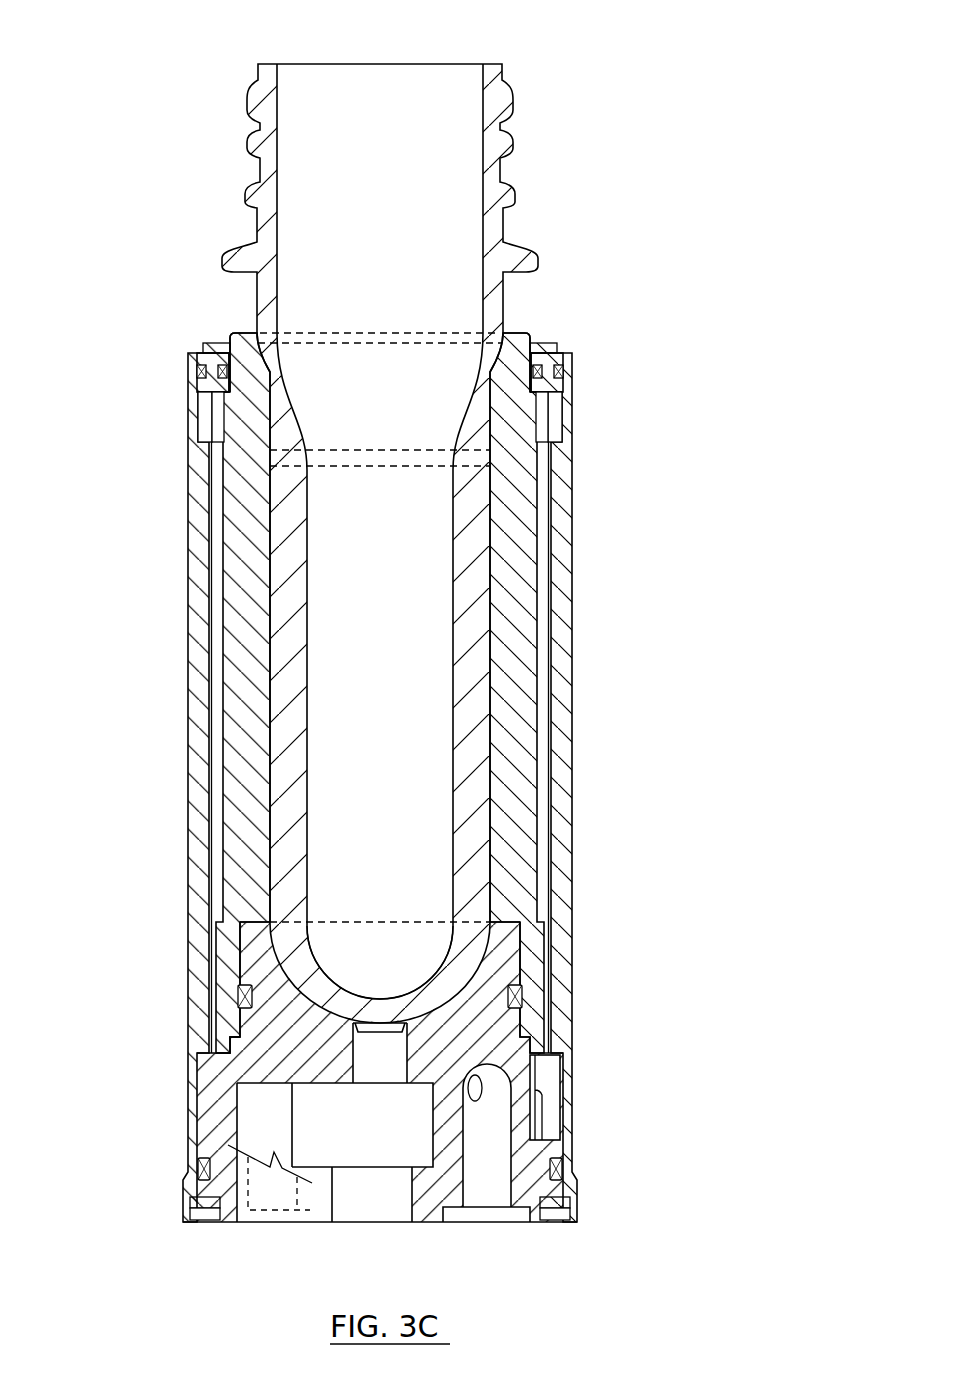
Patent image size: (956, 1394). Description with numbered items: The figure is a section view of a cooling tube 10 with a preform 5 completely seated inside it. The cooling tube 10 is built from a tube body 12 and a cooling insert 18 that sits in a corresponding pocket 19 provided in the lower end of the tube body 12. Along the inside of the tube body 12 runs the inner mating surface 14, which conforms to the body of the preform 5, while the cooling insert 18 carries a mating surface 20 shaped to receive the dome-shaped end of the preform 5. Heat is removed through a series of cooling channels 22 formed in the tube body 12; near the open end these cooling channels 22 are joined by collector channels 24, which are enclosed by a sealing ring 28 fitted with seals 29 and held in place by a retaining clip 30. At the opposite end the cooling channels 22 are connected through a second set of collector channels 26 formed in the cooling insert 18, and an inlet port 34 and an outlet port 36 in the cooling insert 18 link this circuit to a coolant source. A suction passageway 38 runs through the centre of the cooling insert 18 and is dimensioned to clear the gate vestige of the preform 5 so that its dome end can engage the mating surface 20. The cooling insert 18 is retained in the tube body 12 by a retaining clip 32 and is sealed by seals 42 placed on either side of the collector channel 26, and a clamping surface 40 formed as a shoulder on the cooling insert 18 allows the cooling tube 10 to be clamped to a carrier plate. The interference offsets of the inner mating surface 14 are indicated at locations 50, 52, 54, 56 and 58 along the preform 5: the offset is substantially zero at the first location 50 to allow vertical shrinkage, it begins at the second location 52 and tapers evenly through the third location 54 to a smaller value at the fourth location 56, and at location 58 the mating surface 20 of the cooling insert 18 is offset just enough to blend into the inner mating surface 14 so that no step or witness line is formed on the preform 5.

The preform 5 is at (420, 85).
The cooling tube 10 is at (155, 345).
The tube body 12 is at (515, 497).
The inner mating surface 14 is at (478, 660).
The cooling insert 18 is at (505, 960).
The pocket 19 is at (562, 1190).
The mating surface 20 is at (457, 978).
The cooling channels 22 is at (543, 710).
The collector channels 24 is at (543, 418).
The collector channels 26 is at (540, 1112).
The sealing ring 28 is at (565, 357).
The seals 29 is at (567, 383).
The retaining clip 30 is at (548, 336).
The retaining clip 32 is at (563, 1213).
The inlet port 34 is at (487, 1196).
The outlet port 36 is at (273, 1197).
The suction passageway 38 is at (383, 1070).
The clamping surface 40 is at (330, 1155).
The seals 42 is at (515, 993).
The first location 50 is at (233, 437).
The second location 52 is at (270, 574).
The third location 54 is at (270, 714).
The fourth location 56 is at (245, 900).
The location 58 is at (247, 1040).